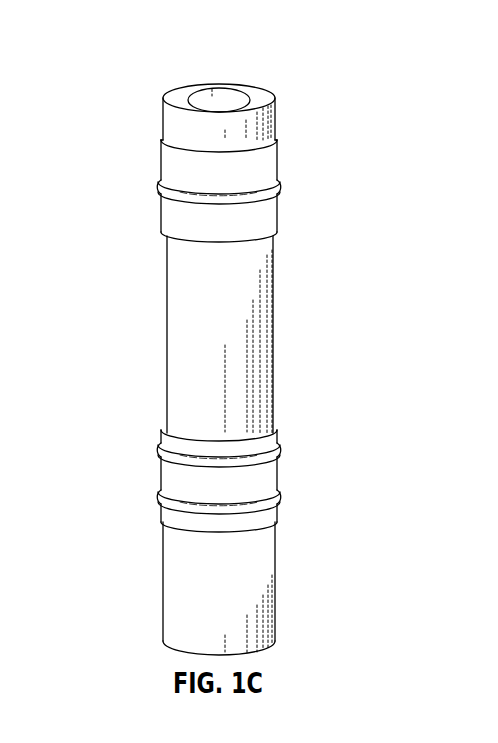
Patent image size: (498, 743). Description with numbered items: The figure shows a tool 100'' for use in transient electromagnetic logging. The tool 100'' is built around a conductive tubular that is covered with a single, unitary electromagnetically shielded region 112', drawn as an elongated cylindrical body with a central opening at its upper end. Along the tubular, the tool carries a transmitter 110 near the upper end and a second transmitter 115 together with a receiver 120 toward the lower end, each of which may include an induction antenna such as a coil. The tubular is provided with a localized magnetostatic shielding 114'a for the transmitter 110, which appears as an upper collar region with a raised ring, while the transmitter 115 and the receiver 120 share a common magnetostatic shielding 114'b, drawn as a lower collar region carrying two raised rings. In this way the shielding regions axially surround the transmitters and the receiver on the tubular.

The tool 100'' is at (193, 351).
The electromagnetically shielded region 112' is at (252, 120).
The localized magnetostatic shielding 114'a is at (177, 187).
The transmitter 110 is at (279, 190).
The magnetostatic shielding 114'b is at (209, 477).
The transmitter 115 is at (279, 452).
The receiver 120 is at (279, 499).